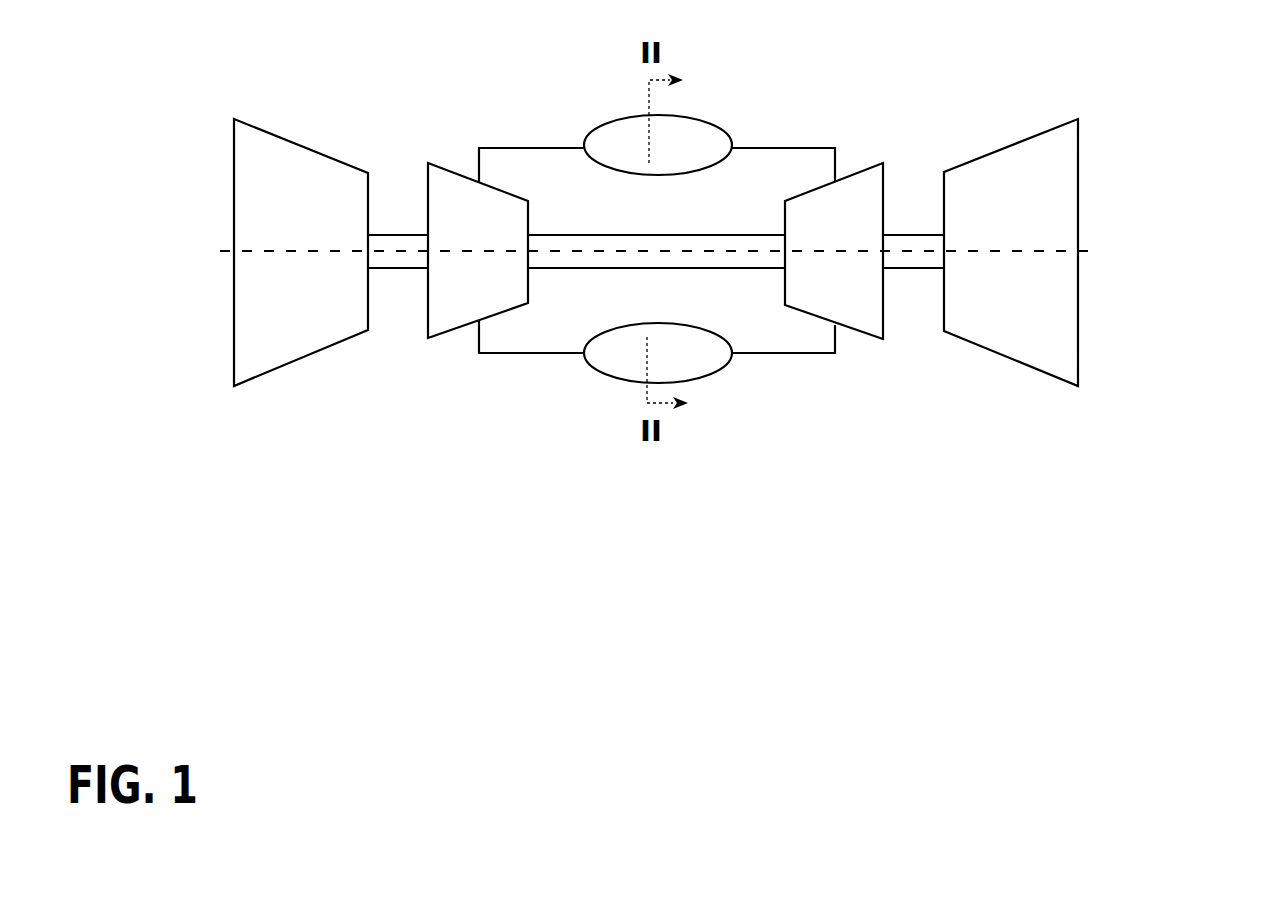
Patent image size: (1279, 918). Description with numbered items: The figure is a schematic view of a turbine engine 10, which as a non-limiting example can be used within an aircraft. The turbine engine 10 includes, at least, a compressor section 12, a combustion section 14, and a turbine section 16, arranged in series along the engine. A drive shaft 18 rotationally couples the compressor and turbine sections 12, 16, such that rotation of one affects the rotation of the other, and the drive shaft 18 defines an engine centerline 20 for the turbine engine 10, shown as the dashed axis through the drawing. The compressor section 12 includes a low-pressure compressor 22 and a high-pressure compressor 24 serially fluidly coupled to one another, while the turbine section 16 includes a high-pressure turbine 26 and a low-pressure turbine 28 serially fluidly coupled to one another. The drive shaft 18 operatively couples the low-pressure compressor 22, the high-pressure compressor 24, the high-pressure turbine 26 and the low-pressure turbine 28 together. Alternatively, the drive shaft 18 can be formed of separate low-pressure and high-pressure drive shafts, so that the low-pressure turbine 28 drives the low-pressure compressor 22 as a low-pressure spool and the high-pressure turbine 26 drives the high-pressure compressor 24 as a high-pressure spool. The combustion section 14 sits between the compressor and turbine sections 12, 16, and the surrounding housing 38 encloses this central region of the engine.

The turbine engine 10 is at (1264, 131).
The compressor section 12 is at (257, 114).
The combustion section 14 is at (618, 380).
The turbine section 16 is at (999, 115).
The drive shaft 18 is at (662, 230).
The engine centerline 20 is at (1088, 251).
The low-pressure compressor 22 is at (338, 158).
The high-pressure compressor 24 is at (433, 338).
The high-pressure turbine 26 is at (885, 193).
The low-pressure turbine 28 is at (1078, 168).
The bearing housing 38 is at (787, 353).